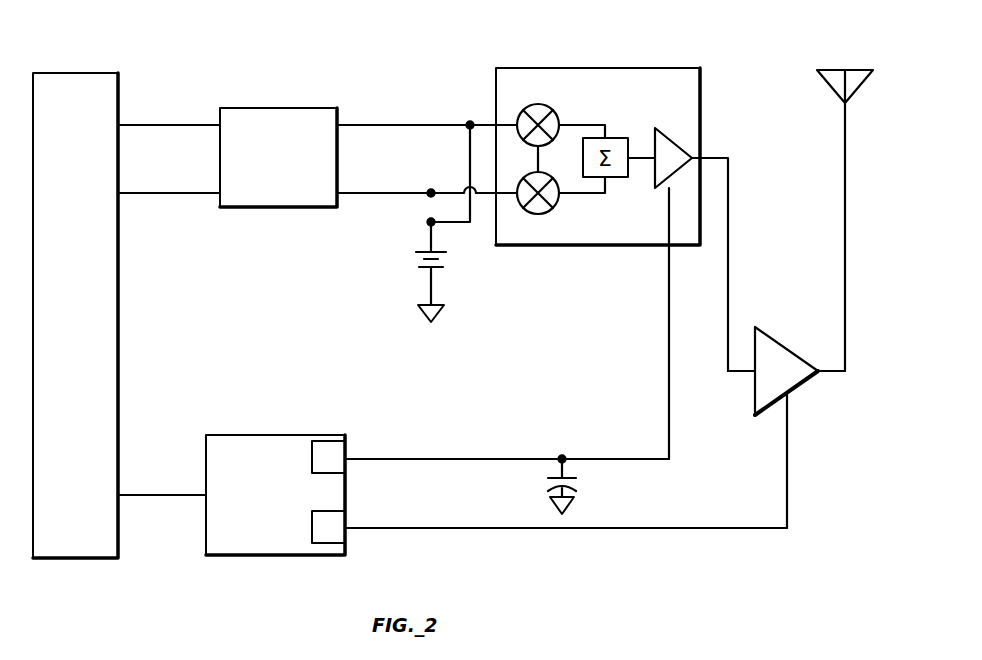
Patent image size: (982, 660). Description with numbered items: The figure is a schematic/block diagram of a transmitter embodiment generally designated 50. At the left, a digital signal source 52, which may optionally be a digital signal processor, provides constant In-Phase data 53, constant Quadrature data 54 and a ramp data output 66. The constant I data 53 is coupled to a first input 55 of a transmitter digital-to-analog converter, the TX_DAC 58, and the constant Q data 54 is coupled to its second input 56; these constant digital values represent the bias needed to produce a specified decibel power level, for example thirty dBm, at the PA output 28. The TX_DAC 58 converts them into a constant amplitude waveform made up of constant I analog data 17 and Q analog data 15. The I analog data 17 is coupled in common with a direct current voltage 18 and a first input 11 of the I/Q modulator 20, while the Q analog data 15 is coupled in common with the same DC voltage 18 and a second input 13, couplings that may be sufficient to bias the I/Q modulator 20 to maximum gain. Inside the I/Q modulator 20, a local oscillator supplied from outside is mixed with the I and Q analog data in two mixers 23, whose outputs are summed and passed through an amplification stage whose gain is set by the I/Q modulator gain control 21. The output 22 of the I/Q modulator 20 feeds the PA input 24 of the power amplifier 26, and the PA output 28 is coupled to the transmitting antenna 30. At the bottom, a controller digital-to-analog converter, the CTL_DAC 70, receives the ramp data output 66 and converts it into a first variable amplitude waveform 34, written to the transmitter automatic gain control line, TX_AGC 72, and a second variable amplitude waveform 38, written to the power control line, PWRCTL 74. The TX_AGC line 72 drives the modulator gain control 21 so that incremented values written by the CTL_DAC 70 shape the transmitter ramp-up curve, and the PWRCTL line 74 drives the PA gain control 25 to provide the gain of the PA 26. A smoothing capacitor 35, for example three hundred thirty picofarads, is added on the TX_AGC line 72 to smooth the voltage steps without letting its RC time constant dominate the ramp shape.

The schematic/block diagram of the embodiment 50 is at (336, 34).
The digital signal source 52 is at (68, 72).
The constant In-Phase (I) data 53 is at (126, 124).
The constant Quadrature (Q) data 54 is at (128, 195).
The first input of the TX_DAC 55 is at (212, 124).
The second input of the TX_DAC 56 is at (222, 210).
The transmitter digital-to-analog converter (TX_DAC) 58 is at (258, 108).
The constant I analog data 17 is at (350, 124).
The Q analog data 15 is at (386, 196).
The first input of the I/Q modulator 11 is at (484, 124).
The second input of the I/Q modulator 13 is at (480, 198).
The direct current (DC) voltage 18 is at (446, 252).
The I/Q modulator 20 is at (594, 68).
The mixers 23 is at (557, 118).
The output of the I/Q modulator 22 is at (708, 158).
The I/Q modulator gain control 21 is at (668, 327).
The power amplifier (PA) 26 is at (762, 327).
The PA input 24 is at (742, 378).
The PA output 28 is at (828, 376).
The PA gain control 25 is at (789, 447).
The transmitting antenna 30 is at (835, 70).
The controller digital-to-analog converter (CTL_DAC) 70 is at (266, 435).
The first variable amplitude waveform 34 is at (328, 457).
The second variable amplitude waveform 38 is at (328, 527).
The ramp data output 66 is at (128, 494).
The transmitter automatic gain control (TX_AGC) line 72 is at (458, 458).
The smoothing capacitor 35 is at (575, 471).
The power control (PWRCTL) line 74 is at (394, 530).